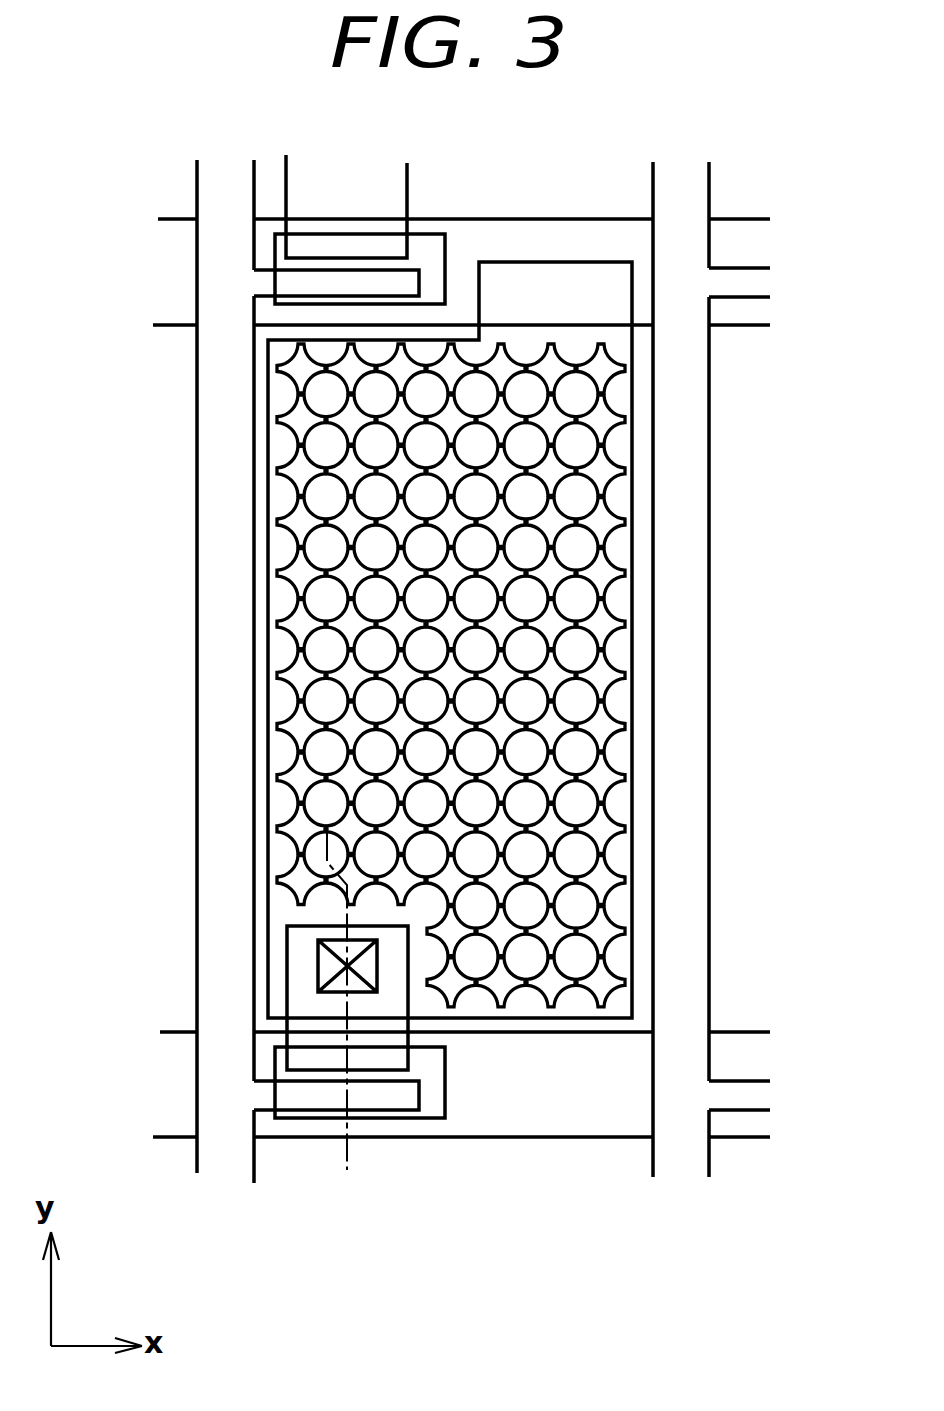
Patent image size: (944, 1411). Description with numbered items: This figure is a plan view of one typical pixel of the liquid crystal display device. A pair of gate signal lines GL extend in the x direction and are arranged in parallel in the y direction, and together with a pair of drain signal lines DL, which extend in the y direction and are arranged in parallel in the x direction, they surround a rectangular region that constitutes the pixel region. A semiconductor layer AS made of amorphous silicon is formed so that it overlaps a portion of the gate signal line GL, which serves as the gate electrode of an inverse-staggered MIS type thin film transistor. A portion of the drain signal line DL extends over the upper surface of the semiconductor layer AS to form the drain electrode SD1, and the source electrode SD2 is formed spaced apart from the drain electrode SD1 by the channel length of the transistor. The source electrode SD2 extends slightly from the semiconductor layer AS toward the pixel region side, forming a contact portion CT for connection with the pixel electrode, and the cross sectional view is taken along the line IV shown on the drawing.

The gate signal line GL is at (585, 227).
The drain signal line DL is at (200, 823).
The drain electrode SD1 is at (300, 1102).
The source electrode SD2 is at (287, 990).
The semiconductor layer AS is at (432, 1118).
The contact portion CT is at (318, 955).
The line IV- IV is at (327, 842).